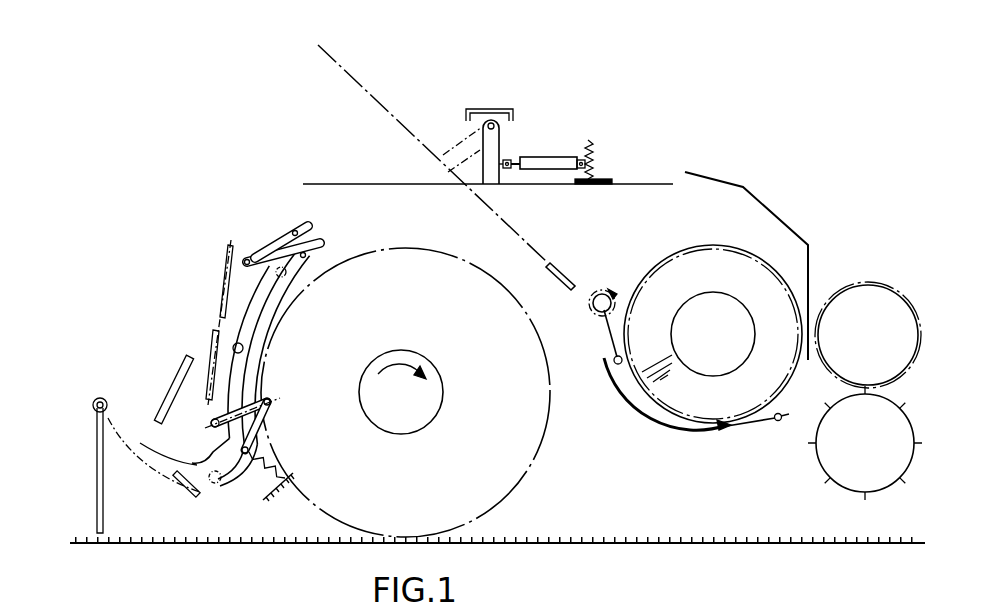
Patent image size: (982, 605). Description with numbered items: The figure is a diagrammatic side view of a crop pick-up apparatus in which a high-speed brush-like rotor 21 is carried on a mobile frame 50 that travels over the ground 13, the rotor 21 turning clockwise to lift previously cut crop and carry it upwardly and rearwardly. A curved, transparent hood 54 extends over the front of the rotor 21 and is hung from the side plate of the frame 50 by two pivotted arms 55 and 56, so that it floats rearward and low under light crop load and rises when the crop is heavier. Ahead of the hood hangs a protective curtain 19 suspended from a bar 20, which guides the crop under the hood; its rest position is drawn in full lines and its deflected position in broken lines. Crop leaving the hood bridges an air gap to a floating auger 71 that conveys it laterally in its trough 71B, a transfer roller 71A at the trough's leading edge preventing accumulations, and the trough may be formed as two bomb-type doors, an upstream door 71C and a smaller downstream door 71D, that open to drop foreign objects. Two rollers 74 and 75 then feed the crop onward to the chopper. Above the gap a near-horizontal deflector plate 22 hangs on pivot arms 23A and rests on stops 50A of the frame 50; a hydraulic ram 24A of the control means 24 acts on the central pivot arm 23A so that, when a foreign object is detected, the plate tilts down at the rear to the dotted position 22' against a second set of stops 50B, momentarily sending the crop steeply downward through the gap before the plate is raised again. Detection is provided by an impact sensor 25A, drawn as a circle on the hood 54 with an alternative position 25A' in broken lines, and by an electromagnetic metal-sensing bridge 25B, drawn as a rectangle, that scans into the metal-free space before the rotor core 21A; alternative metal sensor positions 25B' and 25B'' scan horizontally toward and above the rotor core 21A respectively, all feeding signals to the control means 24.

The ground 13 is at (637, 547).
The protective curtain 19 is at (104, 508).
The bar 20 is at (93, 409).
The high-speed rotor 21 is at (458, 491).
The rotor core section 21A is at (438, 368).
The deflector plate 22 is at (488, 205).
The lowered deflector plate position 22' is at (446, 154).
The pivot arm 23A is at (480, 153).
The control means 24 is at (558, 115).
The hydraulic ram 24A is at (560, 157).
The mobile frame 50 is at (584, 147).
The stops 50A is at (601, 180).
The second set of stops 50B is at (554, 278).
The curved hood 54 is at (278, 301).
The pivotted arm 55 is at (295, 262).
The pivotted arm 56 is at (269, 423).
The impact sensor 25A is at (273, 355).
The alternative impact sensor position 25A' is at (239, 368).
The electromagnetic detector 25B is at (155, 389).
The alternative metal sensor position 25B' is at (189, 357).
The upper metal sensor position 25B'' is at (199, 316).
The floating auger 71 is at (737, 250).
The transfer roller 71A is at (596, 314).
The trough 71B is at (614, 363).
The upstream door 71C is at (681, 421).
The downstream door 71D is at (732, 428).
The roller 74 is at (895, 300).
The roller 75 is at (908, 470).